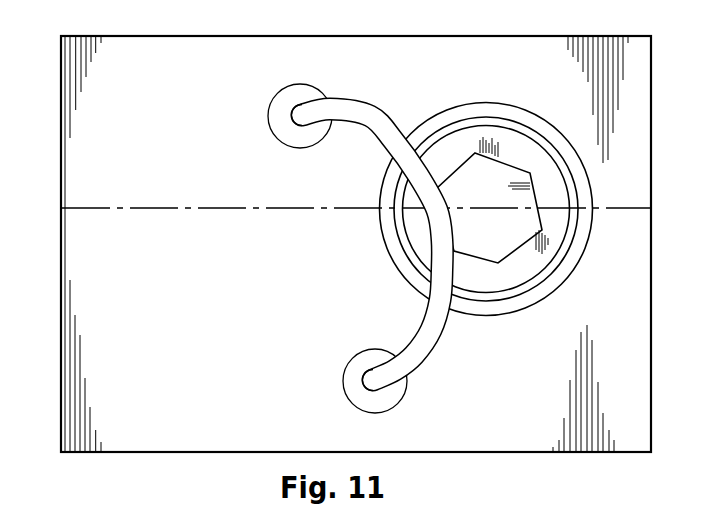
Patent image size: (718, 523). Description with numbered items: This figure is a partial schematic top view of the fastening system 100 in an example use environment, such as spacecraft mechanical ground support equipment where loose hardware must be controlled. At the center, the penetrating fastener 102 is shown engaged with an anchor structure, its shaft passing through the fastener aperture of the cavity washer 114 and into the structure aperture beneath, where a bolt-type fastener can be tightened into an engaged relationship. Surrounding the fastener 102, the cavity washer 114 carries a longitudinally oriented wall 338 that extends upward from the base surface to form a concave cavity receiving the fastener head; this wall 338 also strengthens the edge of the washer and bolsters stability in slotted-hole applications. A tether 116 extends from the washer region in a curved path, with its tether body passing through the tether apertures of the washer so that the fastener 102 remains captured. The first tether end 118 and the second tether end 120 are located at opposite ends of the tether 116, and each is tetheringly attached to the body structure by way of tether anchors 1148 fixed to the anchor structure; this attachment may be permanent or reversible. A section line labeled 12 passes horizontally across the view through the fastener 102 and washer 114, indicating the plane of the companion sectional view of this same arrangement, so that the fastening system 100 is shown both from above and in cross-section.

The fastening system 100 is at (256, 77).
The section line 12- 12 is at (651, 208).
The penetrating fastener 102 is at (542, 140).
The cavity washer 114 is at (592, 243).
The tether 116 is at (376, 107).
The first tether end 118 is at (324, 88).
The second tether end 120 is at (412, 393).
The longitudinally oriented wall 338 is at (477, 100).
The tether anchors 1148 is at (307, 134).